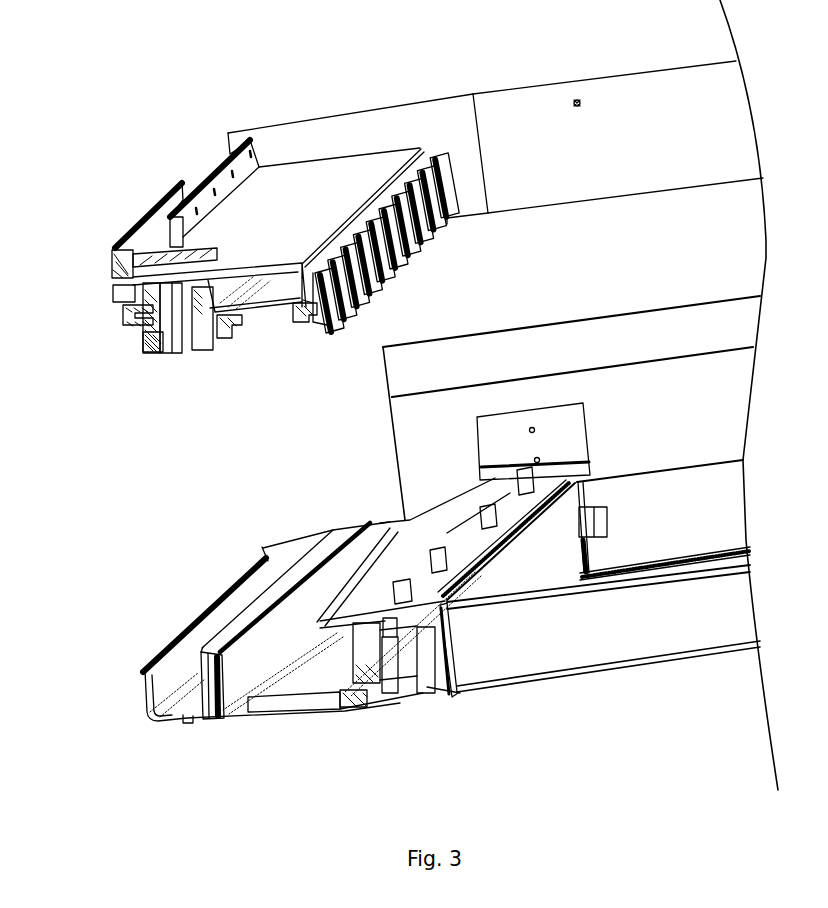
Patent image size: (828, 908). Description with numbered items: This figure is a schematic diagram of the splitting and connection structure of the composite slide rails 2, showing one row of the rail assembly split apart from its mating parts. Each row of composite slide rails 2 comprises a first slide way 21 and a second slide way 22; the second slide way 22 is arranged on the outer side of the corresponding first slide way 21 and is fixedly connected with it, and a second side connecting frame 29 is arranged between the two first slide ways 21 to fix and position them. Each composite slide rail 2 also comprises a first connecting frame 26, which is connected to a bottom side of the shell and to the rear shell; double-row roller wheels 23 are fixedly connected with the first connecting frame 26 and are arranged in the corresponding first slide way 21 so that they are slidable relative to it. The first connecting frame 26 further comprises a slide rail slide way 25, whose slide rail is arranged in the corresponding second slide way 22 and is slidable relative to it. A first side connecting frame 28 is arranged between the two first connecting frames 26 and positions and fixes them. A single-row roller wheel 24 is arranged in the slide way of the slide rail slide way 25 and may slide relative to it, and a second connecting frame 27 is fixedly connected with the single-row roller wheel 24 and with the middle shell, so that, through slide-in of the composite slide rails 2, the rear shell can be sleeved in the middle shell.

The composite slide rail 2 is at (398, 575).
The first slide way 21 is at (353, 700).
The second slide way 22 is at (193, 713).
The double-row roller wheel 23 is at (322, 340).
The single-row roller wheel 24 is at (166, 353).
The slide rail slide way 25 is at (143, 337).
The first connecting frame 26 is at (238, 208).
The second connecting frame 27 is at (117, 250).
The first side connecting frame 28 is at (528, 98).
The second side connecting frame 29 is at (610, 670).